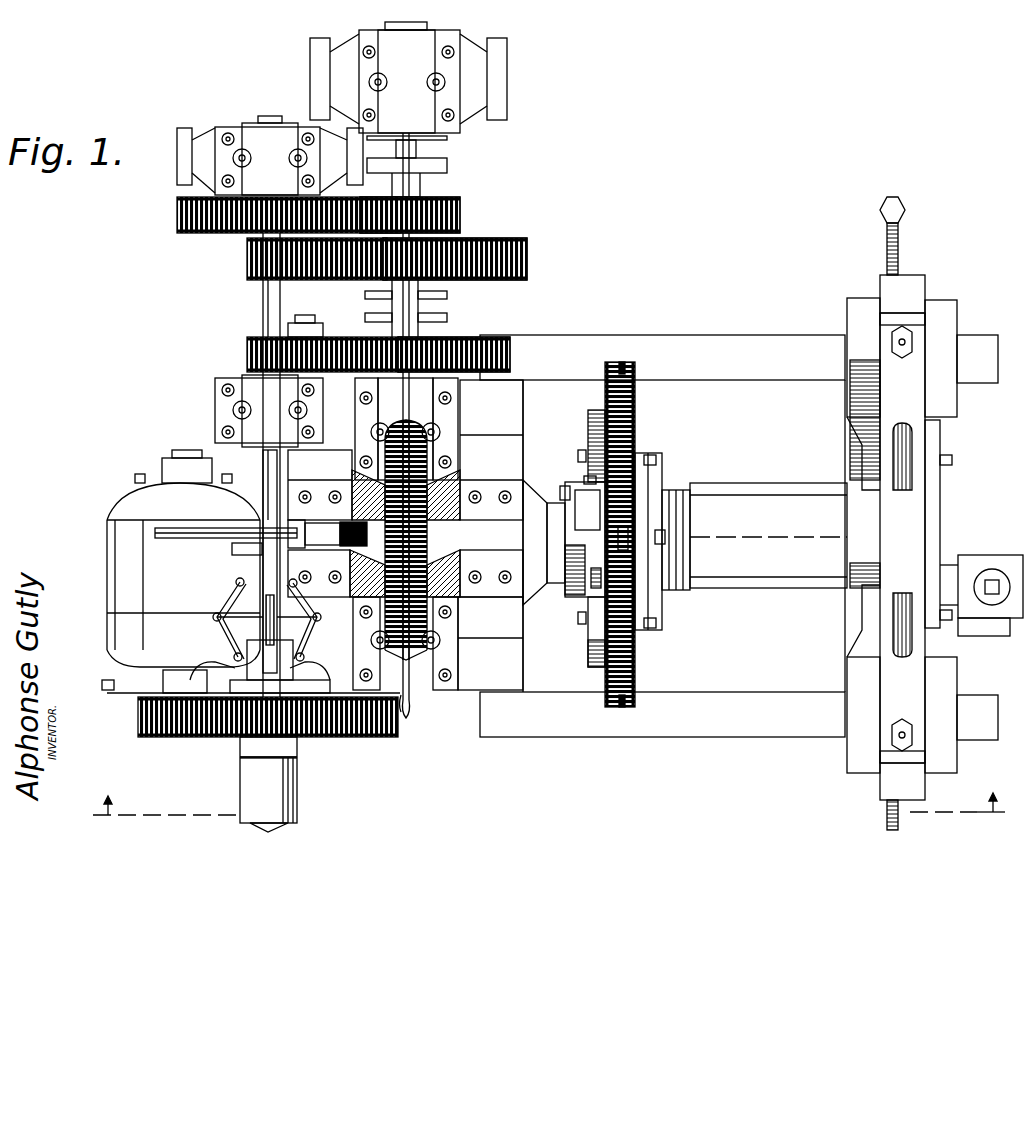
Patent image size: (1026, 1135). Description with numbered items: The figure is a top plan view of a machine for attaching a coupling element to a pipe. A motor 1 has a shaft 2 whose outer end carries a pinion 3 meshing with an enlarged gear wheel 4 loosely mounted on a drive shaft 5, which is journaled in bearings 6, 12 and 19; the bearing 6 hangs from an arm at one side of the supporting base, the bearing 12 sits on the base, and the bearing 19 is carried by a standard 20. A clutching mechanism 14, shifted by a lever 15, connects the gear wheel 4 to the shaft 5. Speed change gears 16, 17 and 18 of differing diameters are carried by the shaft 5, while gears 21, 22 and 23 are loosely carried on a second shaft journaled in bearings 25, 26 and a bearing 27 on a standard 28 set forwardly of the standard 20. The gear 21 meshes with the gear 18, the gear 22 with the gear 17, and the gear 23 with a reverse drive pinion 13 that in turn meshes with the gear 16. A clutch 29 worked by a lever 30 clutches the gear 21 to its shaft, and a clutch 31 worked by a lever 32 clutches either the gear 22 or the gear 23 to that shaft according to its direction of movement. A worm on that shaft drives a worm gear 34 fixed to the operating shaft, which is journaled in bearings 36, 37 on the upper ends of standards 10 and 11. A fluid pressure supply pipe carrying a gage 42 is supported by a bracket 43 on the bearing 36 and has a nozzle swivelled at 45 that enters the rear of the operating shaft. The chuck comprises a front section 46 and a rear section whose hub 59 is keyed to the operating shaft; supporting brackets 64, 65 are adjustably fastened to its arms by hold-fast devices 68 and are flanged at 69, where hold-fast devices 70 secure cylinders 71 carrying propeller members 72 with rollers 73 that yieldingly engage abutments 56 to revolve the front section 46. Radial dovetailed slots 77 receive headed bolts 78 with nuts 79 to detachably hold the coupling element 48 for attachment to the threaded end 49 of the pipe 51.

The motor 1 is at (183, 558).
The shaft 2 is at (175, 693).
The pinion 3 is at (545, 809).
The enlarged gear wheel 4 is at (168, 737).
The drive shaft 5 is at (263, 322).
The bearing 6 is at (297, 787).
The standard 10 is at (336, 485).
The standard 11 is at (475, 450).
The bearing 12 is at (269, 411).
The reverse drive pinion 13 is at (320, 335).
The clutching mechanism 14 is at (235, 568).
The shifting lever 15 is at (235, 550).
The gear 16 is at (247, 351).
The gear 17 is at (247, 262).
The gear 18 is at (200, 233).
The bearing 19 is at (267, 155).
The standard 20 is at (200, 170).
The gear 21 is at (466, 204).
The gear 22 is at (527, 254).
The gear 23 is at (510, 350).
The bearing 25 is at (428, 692).
The bearing 26 is at (440, 405).
The bearing 27 is at (409, 77).
The standard 28 is at (340, 88).
The clutch 29 is at (445, 166).
The lever 30 is at (415, 160).
The clutch 31 is at (440, 308).
The lever 32 is at (411, 350).
The worm gear 34 is at (415, 512).
The bearing 36 is at (336, 573).
The bearing 37 is at (475, 573).
The gage 42 is at (360, 517).
The bracket 43 is at (290, 525).
The swivel connection 45 is at (205, 528).
The front section 46 is at (615, 410).
The coupling element 48 is at (660, 470).
The threaded end 49 is at (676, 490).
The pipe 51 is at (780, 478).
The abutment 56 is at (595, 620).
The hub 59 is at (560, 517).
The supporting bracket 64 is at (590, 424).
The supporting bracket 65 is at (592, 660).
The hold-fast device 68 is at (578, 455).
The flange 69 is at (586, 478).
The hold-fast device 70 is at (563, 492).
The cylinder 71 is at (585, 539).
The propeller member 72 is at (590, 557).
The roller 73 is at (601, 575).
The dovetailed slot 77 is at (622, 364).
The headed bolt 78 is at (623, 550).
The nut 79 is at (652, 455).